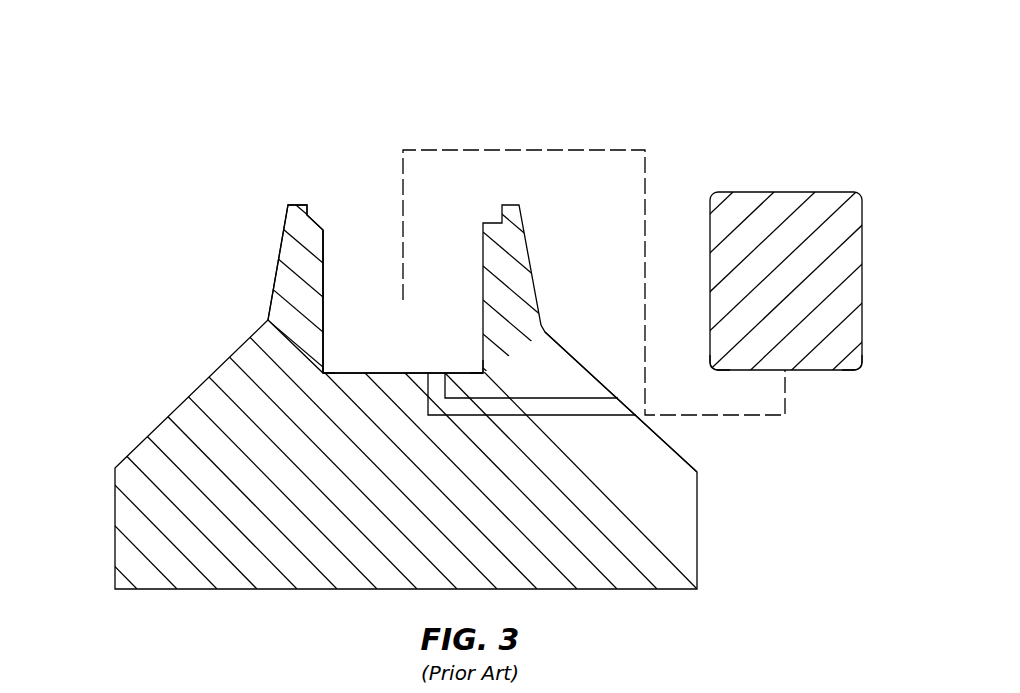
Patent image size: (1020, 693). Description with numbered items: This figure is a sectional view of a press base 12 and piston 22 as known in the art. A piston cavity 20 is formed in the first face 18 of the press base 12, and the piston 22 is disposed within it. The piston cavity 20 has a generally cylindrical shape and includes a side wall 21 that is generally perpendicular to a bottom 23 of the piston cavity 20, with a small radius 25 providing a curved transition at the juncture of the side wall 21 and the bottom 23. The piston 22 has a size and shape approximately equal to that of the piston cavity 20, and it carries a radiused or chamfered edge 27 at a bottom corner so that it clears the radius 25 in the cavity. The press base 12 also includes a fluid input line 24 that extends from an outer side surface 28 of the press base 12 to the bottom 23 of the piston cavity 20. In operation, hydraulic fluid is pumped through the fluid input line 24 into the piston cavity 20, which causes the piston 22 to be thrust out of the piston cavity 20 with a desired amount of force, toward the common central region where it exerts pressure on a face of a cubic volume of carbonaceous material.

The press base 12 is at (125, 548).
The first face 18 is at (297, 203).
The piston cavity 20 is at (388, 310).
The side wall 21 is at (327, 283).
The piston 22 is at (730, 258).
The bottom 23 is at (378, 376).
The fluid input line 24 is at (488, 412).
The small radius 25 is at (322, 376).
The radiused or chamfered edge 27 is at (712, 371).
The outer side surface 28 is at (645, 452).